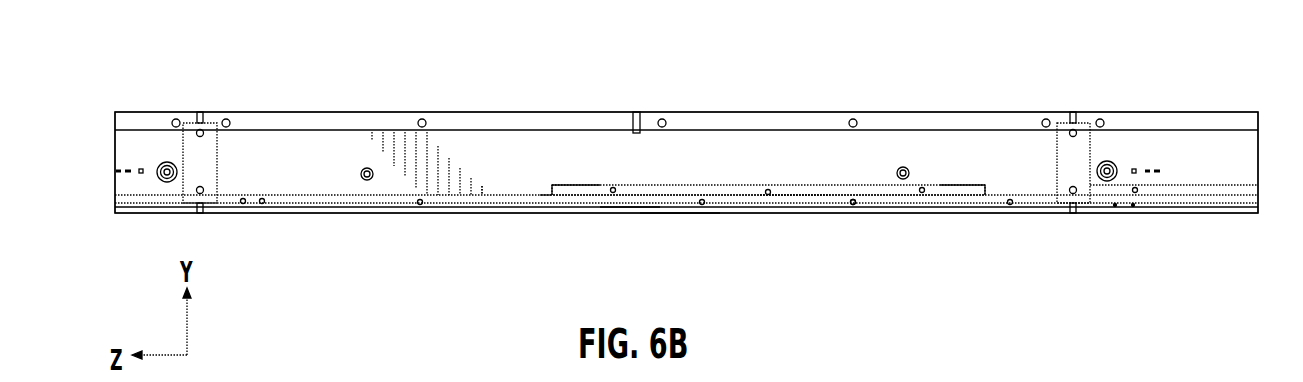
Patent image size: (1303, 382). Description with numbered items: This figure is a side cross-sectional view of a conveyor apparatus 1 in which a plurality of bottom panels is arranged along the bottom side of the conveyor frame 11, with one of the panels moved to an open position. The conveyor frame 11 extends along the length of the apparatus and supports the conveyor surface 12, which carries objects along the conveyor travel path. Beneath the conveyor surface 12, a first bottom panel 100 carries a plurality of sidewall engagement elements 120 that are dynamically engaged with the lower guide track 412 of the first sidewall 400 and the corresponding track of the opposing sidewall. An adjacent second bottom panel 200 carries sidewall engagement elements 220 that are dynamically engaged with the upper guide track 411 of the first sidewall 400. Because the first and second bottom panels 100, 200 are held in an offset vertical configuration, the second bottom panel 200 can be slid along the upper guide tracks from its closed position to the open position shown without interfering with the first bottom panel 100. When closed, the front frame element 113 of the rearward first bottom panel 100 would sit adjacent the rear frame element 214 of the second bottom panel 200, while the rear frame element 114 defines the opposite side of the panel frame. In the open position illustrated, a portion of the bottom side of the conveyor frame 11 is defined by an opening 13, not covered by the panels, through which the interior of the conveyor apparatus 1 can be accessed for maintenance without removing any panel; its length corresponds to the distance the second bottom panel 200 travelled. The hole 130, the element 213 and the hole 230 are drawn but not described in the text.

The conveyor apparatus 1 is at (642, 75).
The conveyor frame 11 is at (1278, 152).
The conveyor surface 12 is at (842, 111).
The opening 13 is at (378, 246).
The first bottom panel 100 is at (795, 200).
The front frame element 113 is at (622, 215).
The rear frame element 114 is at (1080, 224).
The sidewall engagement elements 120 is at (668, 222).
The fastening hole 130 is at (855, 205).
The second bottom panel 200 is at (717, 187).
The plate end portion 213 is at (533, 173).
The rear frame element 214 is at (984, 176).
The sidewall engagement elements 220 is at (582, 177).
The plate hole 230 is at (770, 189).
The first sidewall 400 is at (114, 150).
The upper guide track 411 is at (318, 193).
The lower guide track 412 is at (235, 213).